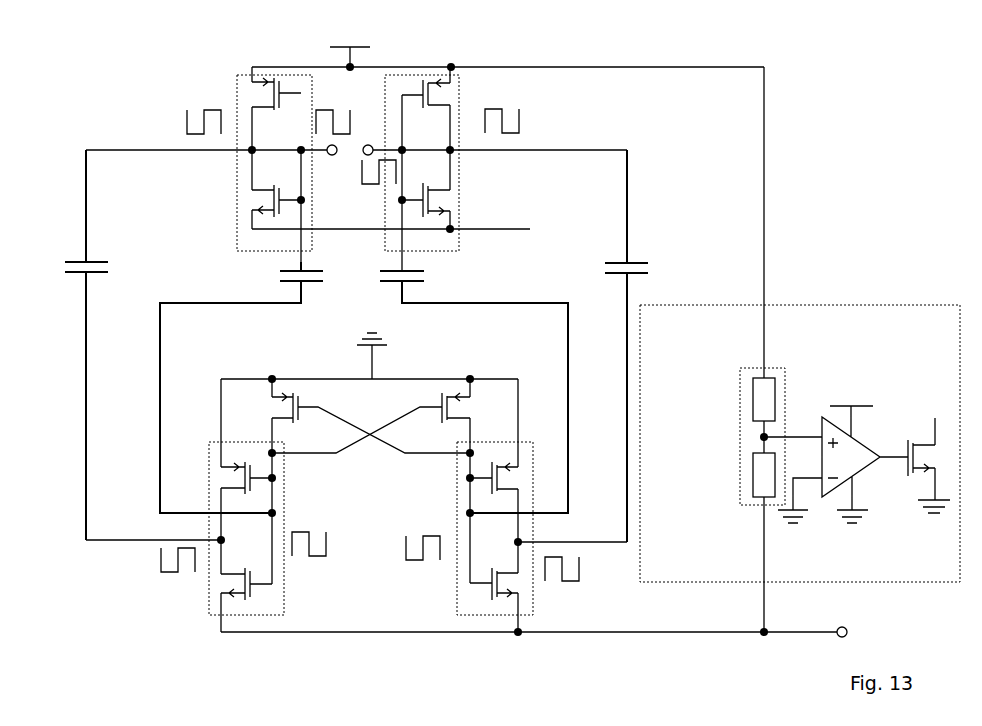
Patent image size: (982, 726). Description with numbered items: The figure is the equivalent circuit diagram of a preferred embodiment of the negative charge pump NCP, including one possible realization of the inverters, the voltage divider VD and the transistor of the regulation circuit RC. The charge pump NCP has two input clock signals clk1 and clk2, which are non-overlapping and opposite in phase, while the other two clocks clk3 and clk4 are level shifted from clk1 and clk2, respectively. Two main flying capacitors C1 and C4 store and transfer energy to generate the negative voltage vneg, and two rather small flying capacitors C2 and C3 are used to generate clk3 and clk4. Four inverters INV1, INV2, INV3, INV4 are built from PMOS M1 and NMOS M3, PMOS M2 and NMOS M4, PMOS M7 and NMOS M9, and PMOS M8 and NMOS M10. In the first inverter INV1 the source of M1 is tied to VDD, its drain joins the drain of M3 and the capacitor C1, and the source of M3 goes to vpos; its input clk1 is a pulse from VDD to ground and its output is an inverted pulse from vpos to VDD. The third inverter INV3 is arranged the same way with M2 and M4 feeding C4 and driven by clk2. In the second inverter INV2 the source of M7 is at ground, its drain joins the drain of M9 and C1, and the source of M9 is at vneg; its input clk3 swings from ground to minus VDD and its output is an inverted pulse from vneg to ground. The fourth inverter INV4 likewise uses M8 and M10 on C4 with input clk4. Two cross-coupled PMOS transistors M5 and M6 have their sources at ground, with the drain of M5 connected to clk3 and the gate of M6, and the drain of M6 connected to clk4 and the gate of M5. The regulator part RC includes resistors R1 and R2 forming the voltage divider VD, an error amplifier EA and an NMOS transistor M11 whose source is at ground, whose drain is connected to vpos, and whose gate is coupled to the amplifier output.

The negative charge pump NCP is at (820, 95).
The first inverter INV1 is at (217, 169).
The second inverter INV2 is at (283, 514).
The third inverter INV3 is at (476, 152).
The fourth inverter INV4 is at (467, 505).
The PMOS transistor M1 is at (265, 100).
The PMOS transistor M2 is at (456, 71).
The NMOS transistor M3 is at (236, 184).
The NMOS transistor M4 is at (456, 193).
The cross-coupled PMOS transistor M5 is at (351, 416).
The cross-coupled PMOS transistor M6 is at (388, 416).
The PMOS transistor M7 is at (222, 478).
The PMOS transistor M8 is at (517, 476).
The NMOS transistor M9 is at (219, 609).
The NMOS transistor M10 is at (534, 599).
The NMOS transistor M11 is at (919, 449).
The flying capacitor C1 is at (76, 345).
The flying capacitor C2 is at (251, 387).
The flying capacitor C3 is at (465, 392).
The flying capacitor C4 is at (649, 346).
The regulation circuit RC is at (840, 304).
The voltage divider VD is at (735, 473).
The resistor R1 is at (766, 377).
The resistor R2 is at (741, 460).
The error amplifier EA is at (870, 467).
The clock signal clk1 is at (337, 122).
The clock signal clk2 is at (371, 180).
The clock signal clk3 is at (313, 561).
The clock signal clk4 is at (427, 564).
The supply voltage VDD is at (352, 42).
The positive voltage Vpos vpos is at (502, 210).
The negative output voltage Vneg vneg is at (831, 615).